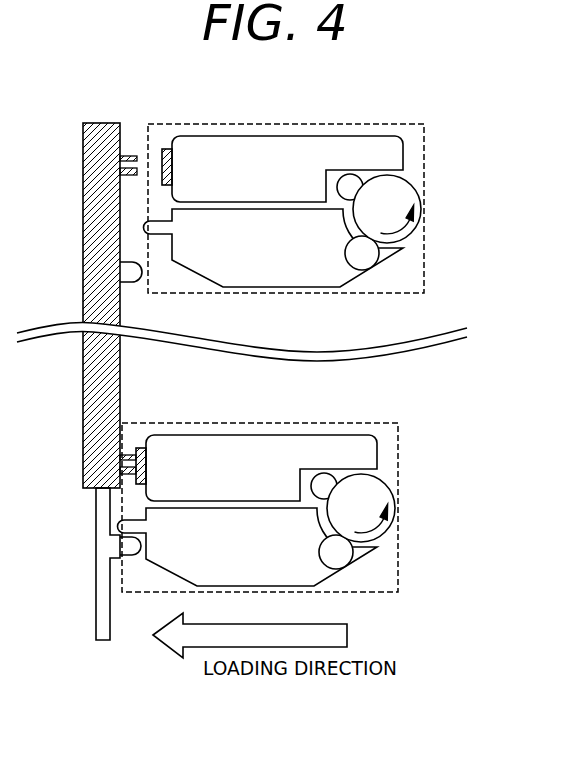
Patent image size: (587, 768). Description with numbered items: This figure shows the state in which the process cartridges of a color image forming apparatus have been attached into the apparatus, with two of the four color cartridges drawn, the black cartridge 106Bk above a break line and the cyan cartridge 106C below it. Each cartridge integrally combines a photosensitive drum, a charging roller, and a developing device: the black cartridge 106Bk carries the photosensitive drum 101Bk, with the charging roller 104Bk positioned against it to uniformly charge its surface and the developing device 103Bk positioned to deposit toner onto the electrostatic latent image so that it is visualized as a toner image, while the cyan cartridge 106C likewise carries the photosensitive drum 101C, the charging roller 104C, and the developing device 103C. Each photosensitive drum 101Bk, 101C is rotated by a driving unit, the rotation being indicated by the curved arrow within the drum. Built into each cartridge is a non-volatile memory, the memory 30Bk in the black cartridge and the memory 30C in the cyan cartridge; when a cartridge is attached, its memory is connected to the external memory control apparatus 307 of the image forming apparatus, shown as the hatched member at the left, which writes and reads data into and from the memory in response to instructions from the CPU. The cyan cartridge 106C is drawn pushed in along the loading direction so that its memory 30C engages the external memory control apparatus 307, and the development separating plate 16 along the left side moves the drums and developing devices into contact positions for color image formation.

The external memory control apparatus 307 is at (102, 123).
The development separating plate 16 is at (101, 603).
The non-volatile memory 30Bk is at (176, 164).
The cartridge 106Bk is at (313, 124).
The charging roller 104Bk is at (338, 186).
The photosensitive drum 101Bk is at (404, 190).
The developing device 103Bk is at (345, 250).
The non-volatile memory 30C is at (147, 463).
The cartridge 106C is at (278, 423).
The charging roller 104C is at (316, 485).
The photosensitive drum 101C is at (381, 490).
The developing device 103C is at (320, 546).